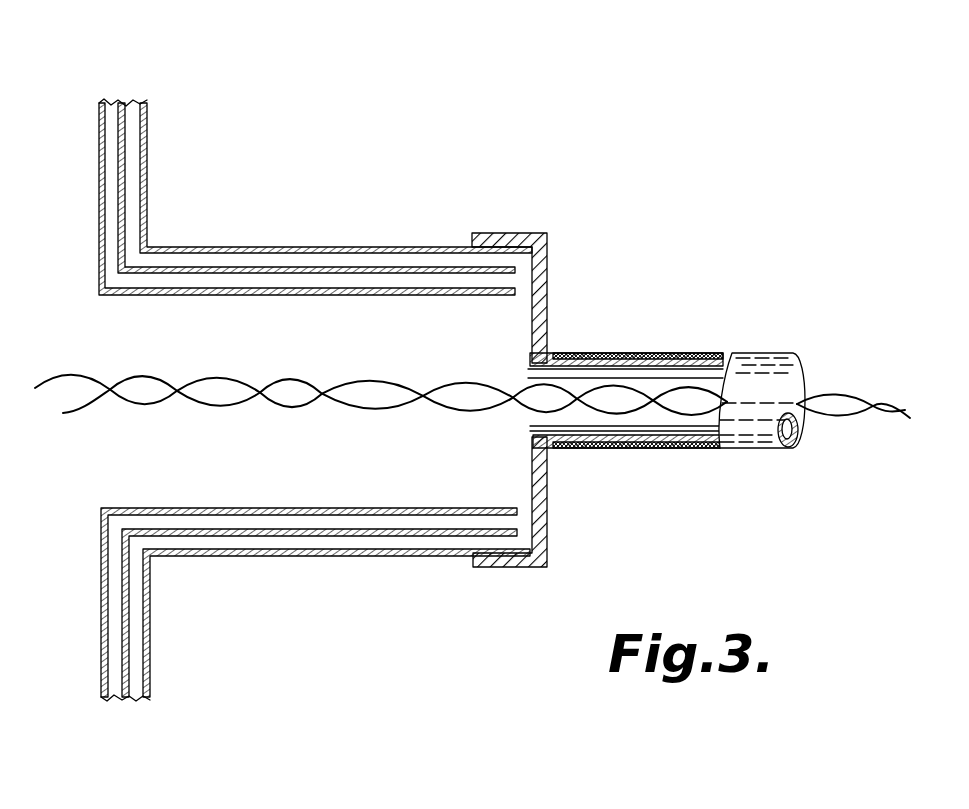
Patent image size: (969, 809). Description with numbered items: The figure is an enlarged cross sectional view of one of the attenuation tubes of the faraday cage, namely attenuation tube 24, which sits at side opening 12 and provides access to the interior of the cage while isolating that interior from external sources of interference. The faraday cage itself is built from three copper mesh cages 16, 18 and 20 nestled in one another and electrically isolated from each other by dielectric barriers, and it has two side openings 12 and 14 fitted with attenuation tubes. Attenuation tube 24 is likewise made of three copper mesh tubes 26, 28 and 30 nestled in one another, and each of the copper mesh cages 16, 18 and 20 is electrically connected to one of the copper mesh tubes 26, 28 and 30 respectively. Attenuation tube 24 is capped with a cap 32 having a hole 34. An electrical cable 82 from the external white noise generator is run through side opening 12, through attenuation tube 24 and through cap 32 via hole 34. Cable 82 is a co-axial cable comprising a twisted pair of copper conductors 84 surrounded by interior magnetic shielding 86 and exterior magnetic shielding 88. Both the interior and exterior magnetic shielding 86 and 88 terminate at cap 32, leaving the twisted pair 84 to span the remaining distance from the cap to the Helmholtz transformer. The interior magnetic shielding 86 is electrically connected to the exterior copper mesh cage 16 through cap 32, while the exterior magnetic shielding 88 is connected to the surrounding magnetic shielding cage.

The side opening 12 is at (335, 400).
The side opening 14 is at (283, 604).
The copper mesh cage 16 is at (152, 627).
The copper mesh cage 18 is at (127, 663).
The copper mesh cage 20 is at (101, 612).
The attenuation tube 24 is at (315, 182).
The copper mesh tube 26 is at (162, 236).
The copper mesh tube 28 is at (312, 267).
The copper mesh tube 30 is at (417, 288).
The cap 32 is at (547, 270).
The hole 34 is at (628, 401).
The electrical cable 82 is at (762, 350).
The twisted pair of copper conductors 84 is at (446, 408).
The interior magnetic shielding 86 is at (682, 352).
The exterior magnetic shielding 88 is at (630, 448).